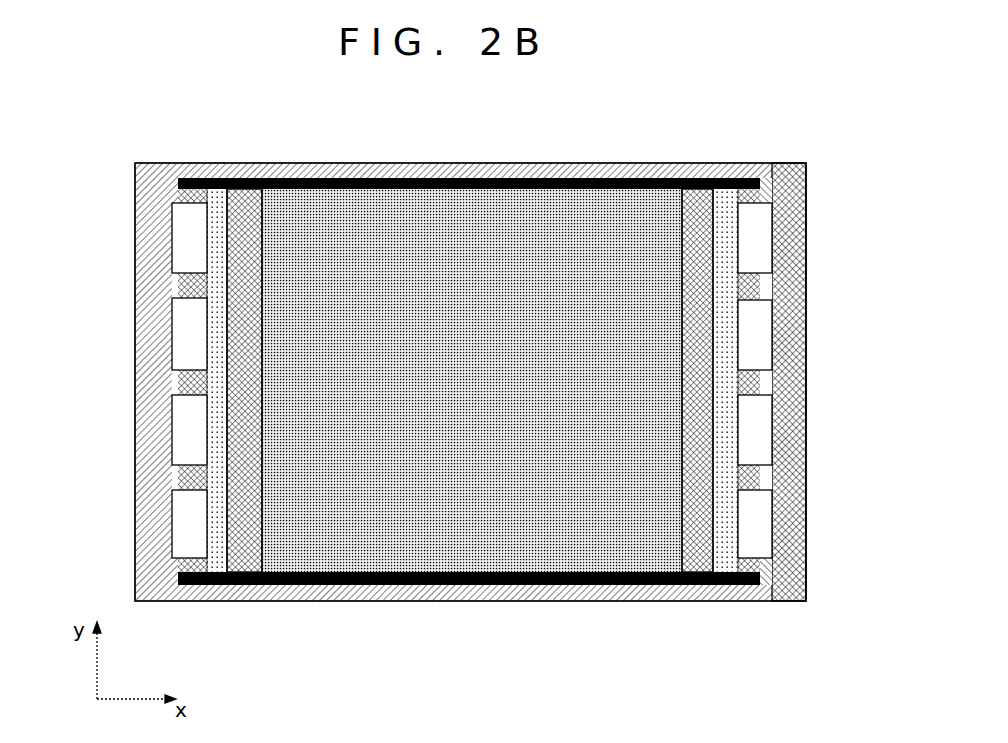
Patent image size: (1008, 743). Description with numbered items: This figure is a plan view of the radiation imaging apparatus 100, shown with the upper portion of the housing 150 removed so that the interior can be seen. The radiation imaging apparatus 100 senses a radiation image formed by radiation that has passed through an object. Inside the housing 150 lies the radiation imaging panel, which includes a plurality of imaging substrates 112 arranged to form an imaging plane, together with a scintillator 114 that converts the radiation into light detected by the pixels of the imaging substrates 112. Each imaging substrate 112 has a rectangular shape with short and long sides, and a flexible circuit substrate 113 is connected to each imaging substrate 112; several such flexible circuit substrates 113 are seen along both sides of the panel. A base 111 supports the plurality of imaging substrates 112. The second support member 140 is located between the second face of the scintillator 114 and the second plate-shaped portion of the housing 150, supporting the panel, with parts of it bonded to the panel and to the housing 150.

The radiation imaging apparatus 100 is at (466, 392).
The base 111 is at (340, 586).
The imaging substrates 112 is at (742, 581).
The flexible circuit substrate 113 is at (173, 537).
The scintillator 114 is at (543, 178).
The second support member 140 is at (251, 186).
The housing 150 is at (400, 164).